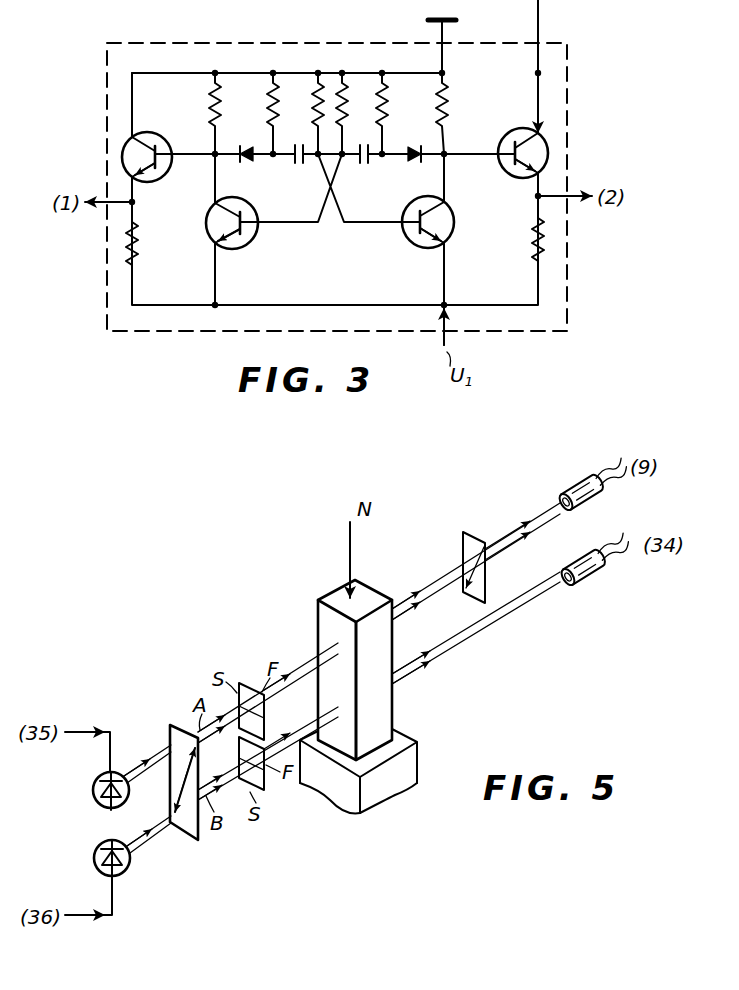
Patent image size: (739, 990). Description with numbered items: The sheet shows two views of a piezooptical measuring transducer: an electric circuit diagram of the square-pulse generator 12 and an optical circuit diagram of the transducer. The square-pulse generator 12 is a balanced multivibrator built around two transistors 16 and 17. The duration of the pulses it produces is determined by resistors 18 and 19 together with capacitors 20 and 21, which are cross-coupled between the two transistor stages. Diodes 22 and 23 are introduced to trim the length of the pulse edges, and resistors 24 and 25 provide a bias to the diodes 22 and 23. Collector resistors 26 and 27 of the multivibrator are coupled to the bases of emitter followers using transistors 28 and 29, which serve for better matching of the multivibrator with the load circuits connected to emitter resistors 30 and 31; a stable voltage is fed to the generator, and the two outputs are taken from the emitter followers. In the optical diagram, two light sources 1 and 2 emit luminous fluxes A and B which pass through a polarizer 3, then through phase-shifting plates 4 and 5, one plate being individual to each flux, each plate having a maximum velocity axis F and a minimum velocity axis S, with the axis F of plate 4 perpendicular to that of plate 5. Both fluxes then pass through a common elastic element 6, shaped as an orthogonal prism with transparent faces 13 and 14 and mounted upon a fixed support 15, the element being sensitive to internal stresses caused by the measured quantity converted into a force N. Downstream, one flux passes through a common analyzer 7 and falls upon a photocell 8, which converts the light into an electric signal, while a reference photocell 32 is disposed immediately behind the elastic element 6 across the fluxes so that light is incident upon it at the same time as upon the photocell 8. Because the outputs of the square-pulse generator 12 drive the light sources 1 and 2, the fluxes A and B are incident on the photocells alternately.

In FIG. 3, the square-pulse generator 12 is at (248, 44).
In FIG. 3, the transistor 16 is at (248, 246).
In FIG. 3, the transistor 17 is at (410, 244).
In FIG. 3, the resistor 18 is at (340, 118).
In FIG. 3, the resistor 19 is at (313, 115).
In FIG. 3, the capacitor 20 is at (366, 166).
In FIG. 3, the capacitor 21 is at (296, 168).
In FIG. 3, the diode 22 is at (413, 147).
In FIG. 3, the diode 23 is at (247, 147).
In FIG. 3, the resistor 24 is at (386, 116).
In FIG. 3, the resistor 25 is at (268, 100).
In FIG. 3, the collector resistor 26 is at (210, 118).
In FIG. 3, the collector resistor 27 is at (448, 116).
In FIG. 3, the transistor 28 is at (140, 133).
In FIG. 3, the transistor 29 is at (517, 130).
In FIG. 3, the emitter resistor 30 is at (140, 246).
In FIG. 3, the emitter resistor 31 is at (534, 240).
In FIG. 5, the light source 1 is at (93, 786).
In FIG. 5, the light source 2 is at (95, 852).
In FIG. 5, the polarizer 3 is at (168, 728).
In FIG. 5, the phase-shifting plate 4 is at (250, 684).
In FIG. 5, the phase-shifting plate 5 is at (264, 782).
In FIG. 5, the elastic element 6 is at (368, 596).
In FIG. 5, the analyzer 7 is at (470, 541).
In FIG. 5, the photocell 8 is at (578, 490).
In FIG. 5, the transparent face 13 is at (330, 623).
In FIG. 5, the transparent face 14 is at (393, 605).
In FIG. 5, the fixed support 15 is at (388, 786).
In FIG. 5, the reference photocell 32 is at (583, 568).